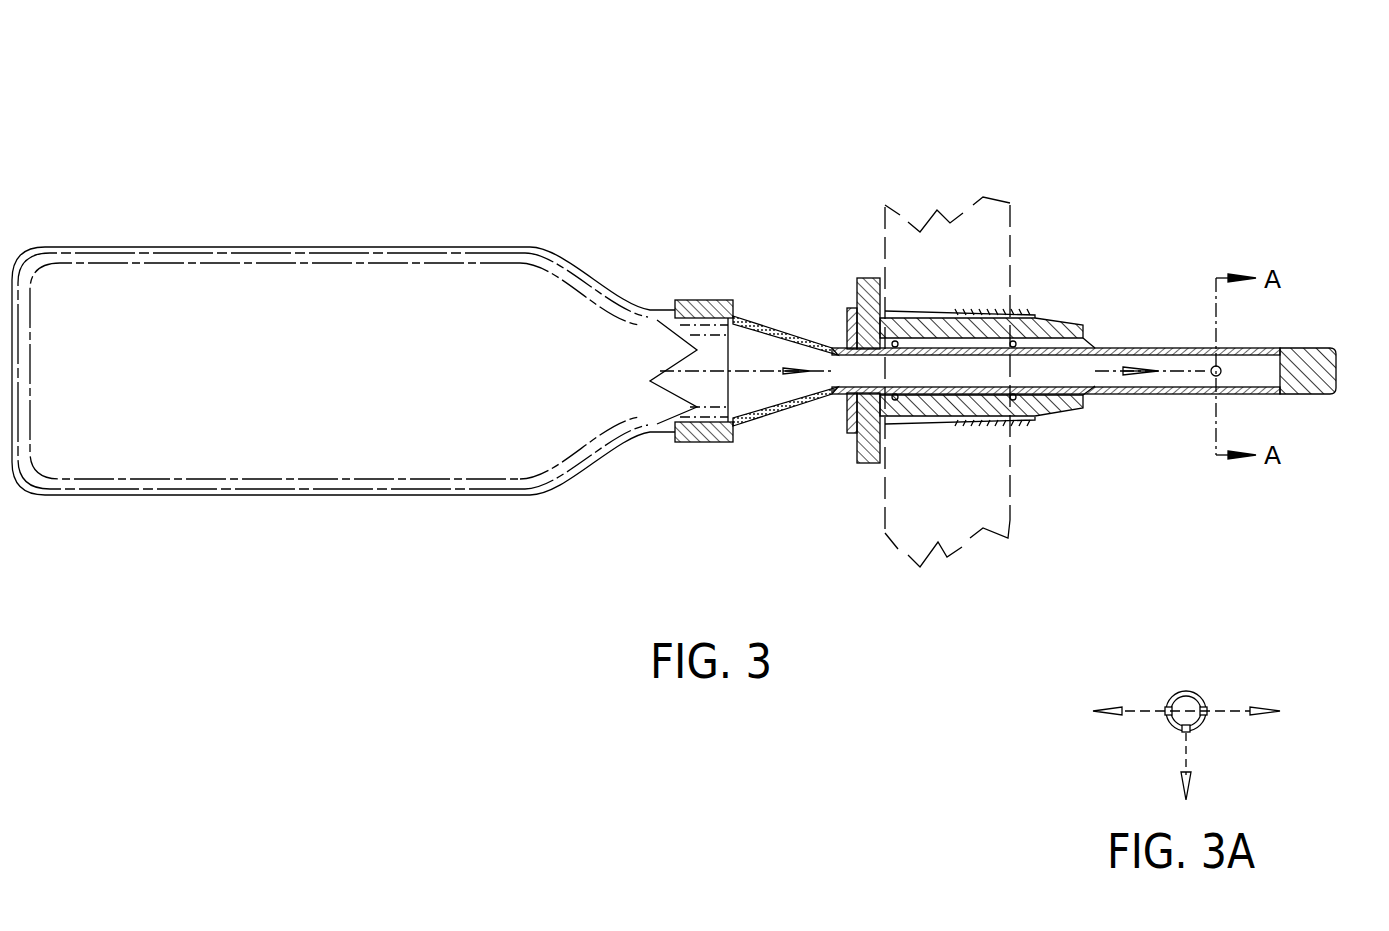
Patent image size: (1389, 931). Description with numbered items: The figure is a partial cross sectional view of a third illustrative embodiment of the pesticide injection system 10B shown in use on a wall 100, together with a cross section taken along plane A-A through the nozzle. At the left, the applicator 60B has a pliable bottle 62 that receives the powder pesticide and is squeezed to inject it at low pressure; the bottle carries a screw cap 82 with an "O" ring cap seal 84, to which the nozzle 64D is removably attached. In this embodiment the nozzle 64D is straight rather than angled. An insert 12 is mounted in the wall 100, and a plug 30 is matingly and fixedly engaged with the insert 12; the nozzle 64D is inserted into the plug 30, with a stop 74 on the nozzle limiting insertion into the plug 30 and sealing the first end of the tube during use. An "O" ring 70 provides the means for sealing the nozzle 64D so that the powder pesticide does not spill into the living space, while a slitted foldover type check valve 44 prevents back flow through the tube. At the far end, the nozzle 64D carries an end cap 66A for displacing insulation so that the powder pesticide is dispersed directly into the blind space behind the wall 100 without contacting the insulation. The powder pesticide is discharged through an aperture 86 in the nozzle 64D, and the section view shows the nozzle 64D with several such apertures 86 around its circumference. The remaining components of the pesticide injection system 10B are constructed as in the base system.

In FIG. 3, the pesticide injection system 10B is at (678, 160).
In FIG. 3, the pliable bottle 62 is at (441, 343).
In FIG. 3, the screw cap 82 is at (690, 300).
In FIG. 3, the "O" ring cap seal 84 is at (718, 440).
In FIG. 3, the applicator 60B is at (753, 262).
In FIG. 3, the nozzle 64D is at (769, 443).
In FIG. 3, the stop 74 is at (847, 422).
In FIG. 3, the plug 30 is at (846, 264).
In FIG. 3, the insert 12 is at (976, 300).
In FIG. 3, the "O" ring 70 is at (945, 422).
In FIG. 3, the slitted foldover type check valve 44 is at (1093, 348).
In FIG. 3, the end cap 66A is at (1312, 348).
In FIG. 3, the aperture 86 is at (1216, 378).
In FIG. 3A, the aperture 86 is at (1165, 705).
In FIG. 3, the wall 100 is at (965, 483).